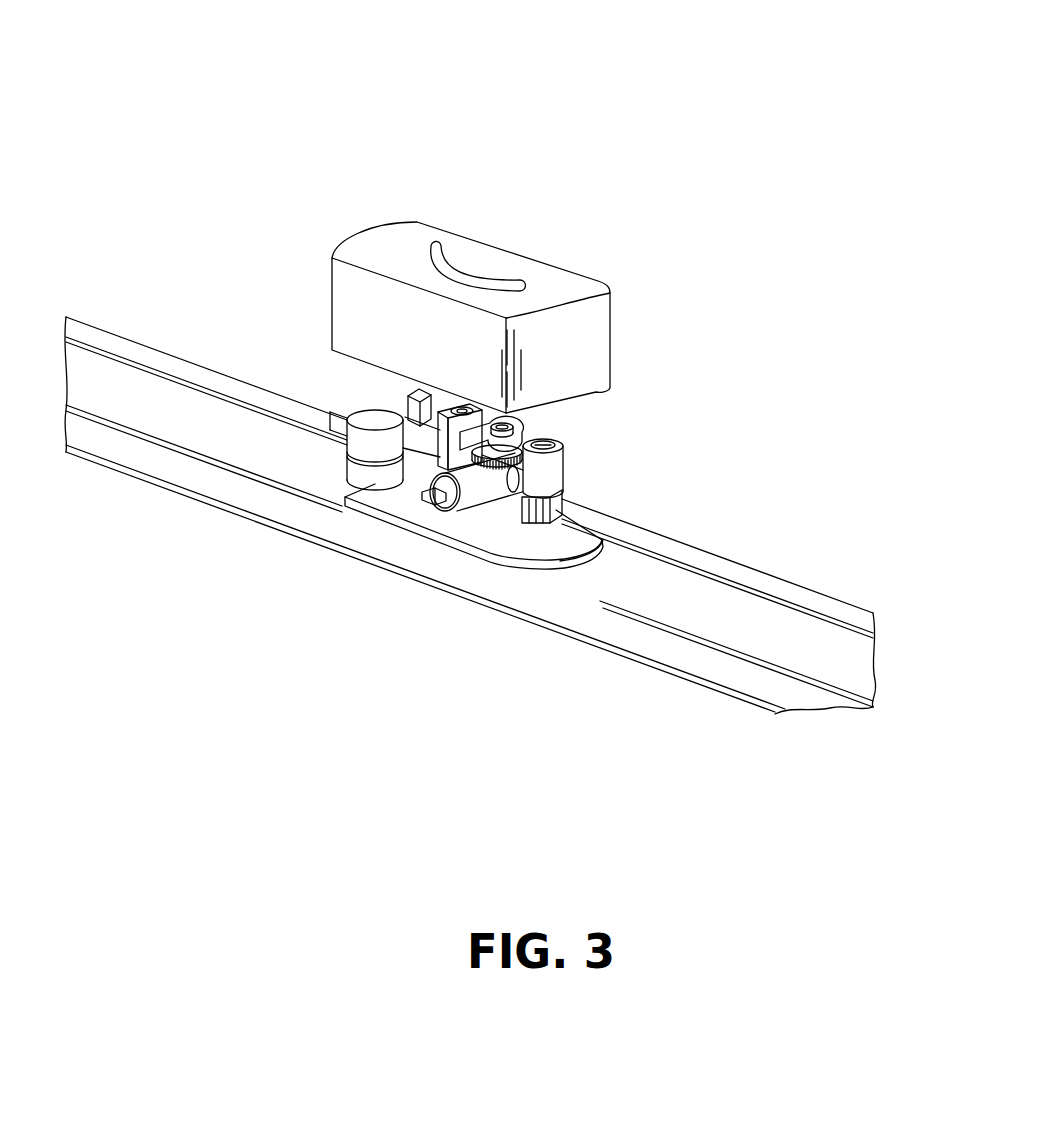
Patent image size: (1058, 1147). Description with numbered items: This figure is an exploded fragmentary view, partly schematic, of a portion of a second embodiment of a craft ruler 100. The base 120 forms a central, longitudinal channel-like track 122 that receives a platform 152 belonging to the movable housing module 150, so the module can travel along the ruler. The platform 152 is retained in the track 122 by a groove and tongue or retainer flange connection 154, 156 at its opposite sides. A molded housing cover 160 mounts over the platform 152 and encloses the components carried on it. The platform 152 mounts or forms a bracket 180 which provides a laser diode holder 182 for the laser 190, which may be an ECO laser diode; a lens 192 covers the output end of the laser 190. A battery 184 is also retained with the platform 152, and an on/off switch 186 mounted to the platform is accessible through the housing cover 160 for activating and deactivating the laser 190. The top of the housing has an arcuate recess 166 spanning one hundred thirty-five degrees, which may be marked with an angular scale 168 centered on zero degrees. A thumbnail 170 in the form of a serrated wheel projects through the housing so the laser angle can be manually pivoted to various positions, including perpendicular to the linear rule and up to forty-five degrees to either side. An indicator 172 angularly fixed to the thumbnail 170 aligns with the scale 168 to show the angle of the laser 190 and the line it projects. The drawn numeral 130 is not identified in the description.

The craft ruler 100 is at (510, 409).
The base 120 is at (510, 560).
The track 122 is at (875, 677).
The rail top surface 130 is at (817, 598).
The movable housing module 150 is at (451, 474).
The platform 152 is at (528, 566).
The groove and tongue or retainer flange connection 154 is at (640, 533).
The groove and tongue or retainer flange connection 156 is at (340, 500).
The housing cover 160 is at (446, 276).
The arcuate recess 166 is at (507, 287).
The angular scale 168 is at (468, 252).
The thumbnail 170 is at (528, 435).
The indicator 172 is at (513, 418).
The bracket 180 is at (563, 463).
The laser diode holder 182 is at (467, 512).
The battery 184 is at (348, 415).
The on/off switch 186 is at (418, 390).
The laser 190 is at (428, 496).
The lens 192 is at (512, 483).